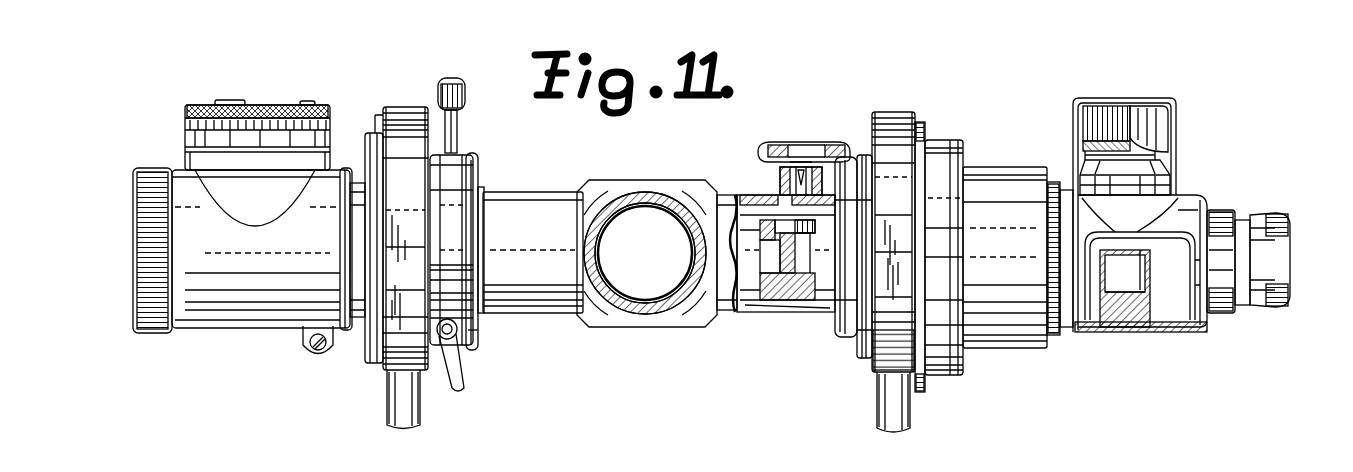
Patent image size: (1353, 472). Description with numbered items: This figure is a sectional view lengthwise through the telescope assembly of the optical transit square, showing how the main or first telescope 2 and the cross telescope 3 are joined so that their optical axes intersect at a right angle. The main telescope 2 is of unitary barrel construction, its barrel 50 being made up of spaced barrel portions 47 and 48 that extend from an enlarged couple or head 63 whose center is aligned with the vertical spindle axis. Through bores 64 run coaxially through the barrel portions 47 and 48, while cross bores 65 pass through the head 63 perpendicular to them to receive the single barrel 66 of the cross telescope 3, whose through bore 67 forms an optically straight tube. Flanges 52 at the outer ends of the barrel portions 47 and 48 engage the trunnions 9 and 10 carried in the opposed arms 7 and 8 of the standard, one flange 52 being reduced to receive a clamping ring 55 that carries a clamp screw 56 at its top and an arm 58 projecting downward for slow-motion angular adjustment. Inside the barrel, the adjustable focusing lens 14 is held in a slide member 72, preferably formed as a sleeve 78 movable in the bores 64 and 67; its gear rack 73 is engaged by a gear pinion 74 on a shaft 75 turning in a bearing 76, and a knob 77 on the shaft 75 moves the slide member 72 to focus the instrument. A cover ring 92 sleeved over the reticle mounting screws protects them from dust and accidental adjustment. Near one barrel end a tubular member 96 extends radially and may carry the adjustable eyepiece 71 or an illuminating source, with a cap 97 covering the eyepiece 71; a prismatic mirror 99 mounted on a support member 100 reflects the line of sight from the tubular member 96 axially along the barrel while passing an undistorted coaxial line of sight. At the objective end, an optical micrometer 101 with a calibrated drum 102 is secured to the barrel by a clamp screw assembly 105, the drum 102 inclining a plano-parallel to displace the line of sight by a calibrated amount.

The main or first telescope 2 is at (488, 188).
The cross telescope 3 is at (650, 268).
The arm 7 is at (387, 410).
The arm 8 is at (915, 425).
The trunnion 9 is at (892, 236).
The trunnion 10 is at (408, 105).
The adjustable focusing lens 14 is at (786, 232).
The barrel portion 47 is at (540, 192).
The barrel portion 48 is at (750, 315).
The barrel 50 is at (530, 318).
The flange 52 is at (473, 340).
The clamping ring 55 is at (465, 152).
The clamp screw 56 is at (456, 78).
The arm 58 is at (462, 370).
The couple or head 63 is at (610, 327).
The through bore 64 is at (845, 312).
The cross bore 65 is at (635, 300).
The barrel 66 is at (688, 300).
The through bore 67 is at (662, 205).
The adjustable eyepiece 71 is at (1156, 229).
The slide member 72 is at (780, 215).
The gear rack 73 is at (790, 220).
The gear pinion 74 is at (838, 218).
The shaft 75 is at (792, 145).
The bearing 76 is at (820, 185).
The knob 77 is at (775, 145).
The sleeve 78 is at (795, 300).
The cover ring 92 is at (1000, 167).
The tubular member 96 is at (1170, 185).
The cap 97 is at (1175, 115).
The prismatic mirror 99 is at (1125, 280).
The support member 100 is at (1140, 330).
The optical micrometer 101 is at (207, 330).
The calibrated drum 102 is at (185, 130).
The clamp screw assembly 105 is at (316, 350).